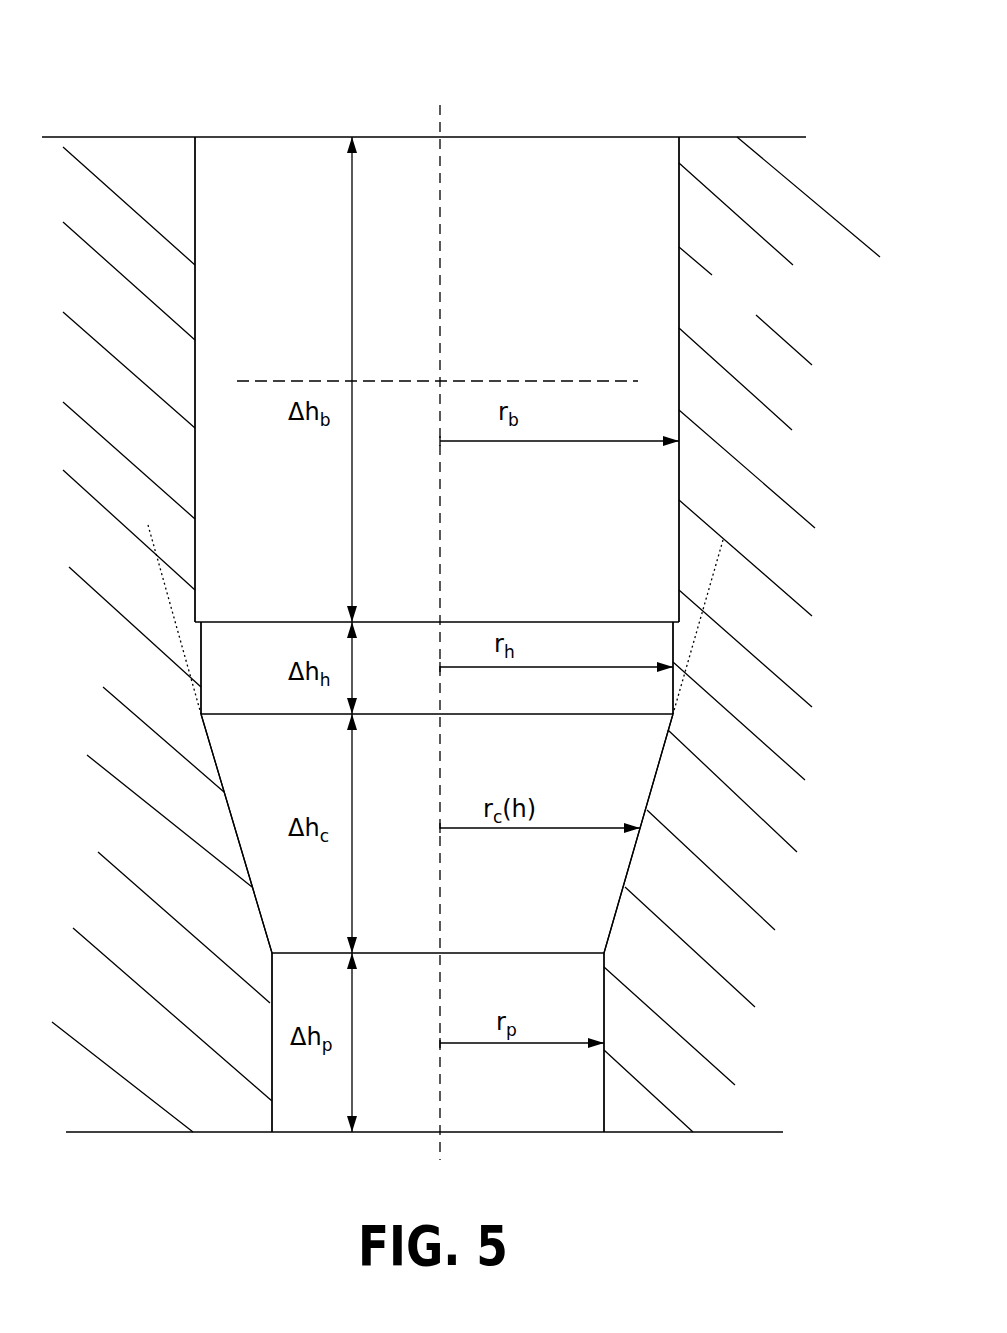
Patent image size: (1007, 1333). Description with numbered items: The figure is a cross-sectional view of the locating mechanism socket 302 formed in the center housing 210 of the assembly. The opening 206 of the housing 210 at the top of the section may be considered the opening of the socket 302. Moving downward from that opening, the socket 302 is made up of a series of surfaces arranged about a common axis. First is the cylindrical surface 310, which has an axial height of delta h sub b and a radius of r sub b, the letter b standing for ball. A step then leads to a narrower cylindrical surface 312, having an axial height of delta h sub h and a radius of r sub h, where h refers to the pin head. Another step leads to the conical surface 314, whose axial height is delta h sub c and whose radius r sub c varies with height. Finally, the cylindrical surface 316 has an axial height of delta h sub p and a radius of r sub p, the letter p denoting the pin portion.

The locating mechanism socket 302 is at (430, 573).
The opening 206 is at (238, 116).
The housing 210 is at (466, 634).
The cylindrical surface 310 is at (196, 222).
The cylindrical surface 312 is at (201, 645).
The conical surface 314 is at (245, 855).
The cylindrical surface 316 is at (271, 1060).